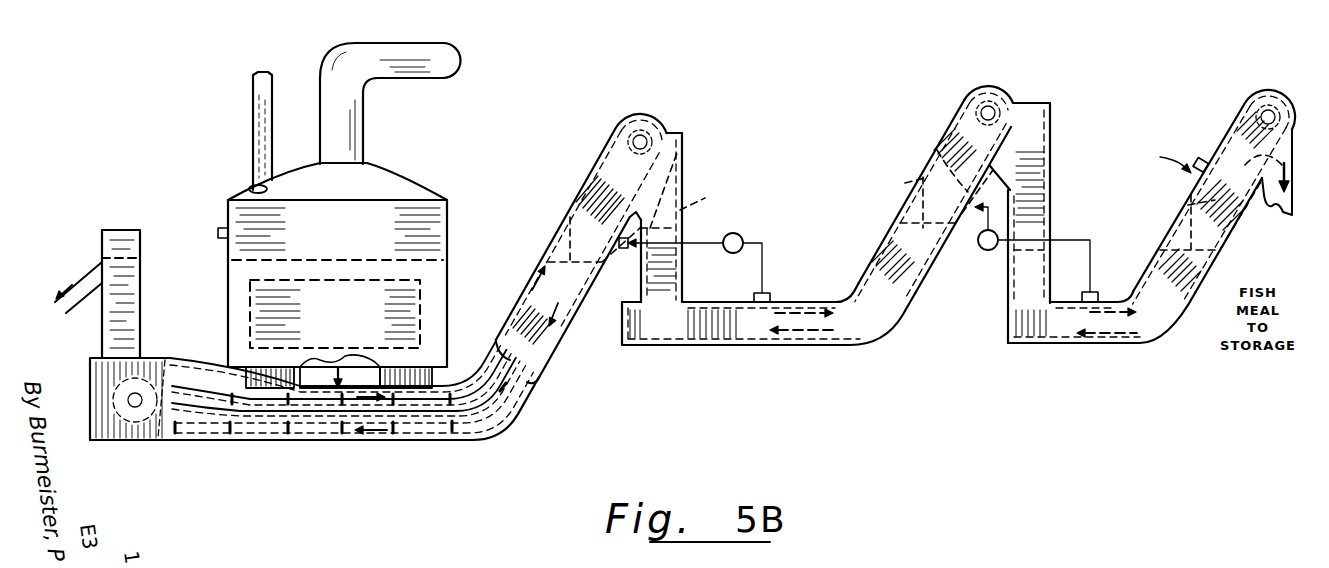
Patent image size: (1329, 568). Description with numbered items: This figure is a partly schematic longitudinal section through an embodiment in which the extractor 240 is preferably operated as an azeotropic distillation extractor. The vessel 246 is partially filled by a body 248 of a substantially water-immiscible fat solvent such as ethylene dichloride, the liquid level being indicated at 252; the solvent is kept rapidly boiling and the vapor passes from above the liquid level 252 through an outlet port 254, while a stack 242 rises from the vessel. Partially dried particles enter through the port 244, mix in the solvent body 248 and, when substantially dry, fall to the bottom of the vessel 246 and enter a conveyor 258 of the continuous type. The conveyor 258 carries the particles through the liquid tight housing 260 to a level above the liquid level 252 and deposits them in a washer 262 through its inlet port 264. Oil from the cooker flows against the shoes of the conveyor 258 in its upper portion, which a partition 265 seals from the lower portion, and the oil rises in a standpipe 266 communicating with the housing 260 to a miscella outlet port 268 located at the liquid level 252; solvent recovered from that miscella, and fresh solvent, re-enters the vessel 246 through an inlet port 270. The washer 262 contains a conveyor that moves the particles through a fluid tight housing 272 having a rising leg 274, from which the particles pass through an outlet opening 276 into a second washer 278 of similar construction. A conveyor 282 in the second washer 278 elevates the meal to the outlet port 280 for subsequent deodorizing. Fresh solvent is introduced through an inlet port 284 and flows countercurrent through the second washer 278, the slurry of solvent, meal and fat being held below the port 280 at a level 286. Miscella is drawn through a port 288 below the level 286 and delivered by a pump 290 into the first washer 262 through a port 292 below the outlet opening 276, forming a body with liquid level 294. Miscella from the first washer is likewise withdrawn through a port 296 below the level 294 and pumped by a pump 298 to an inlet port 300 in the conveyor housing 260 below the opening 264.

The extractor 240 is at (315, 234).
The vapor outlet stack 242 is at (253, 86).
The port 244 is at (252, 190).
The vessel 246 is at (417, 186).
The body of solvent 248 is at (340, 322).
The liquid level 252 is at (118, 256).
The outlet port 254 is at (336, 162).
The conveyor 258 is at (188, 416).
The liquid tight housing 260 is at (518, 280).
The washer 262 is at (763, 352).
The inlet port 264 is at (690, 167).
The partition 265 is at (345, 420).
The standpipe 266 is at (142, 316).
The miscella outlet port 268 is at (96, 266).
The inlet port 270 is at (222, 226).
The fluid tight housing 272 is at (860, 276).
The rising leg 274 is at (963, 118).
The outlet opening 276 is at (1005, 160).
The second washer 278 is at (1168, 302).
The outlet port 280 is at (1271, 189).
The conveyor 282 is at (1112, 341).
The inlet port 284 is at (1197, 160).
The level 286 is at (1028, 250).
The port 288 is at (1093, 292).
The pump 290 is at (992, 251).
The port 292 is at (938, 152).
The liquid level 294 is at (680, 210).
The port 296 is at (771, 297).
The pump 298 is at (741, 234).
The inlet port 300 is at (620, 249).